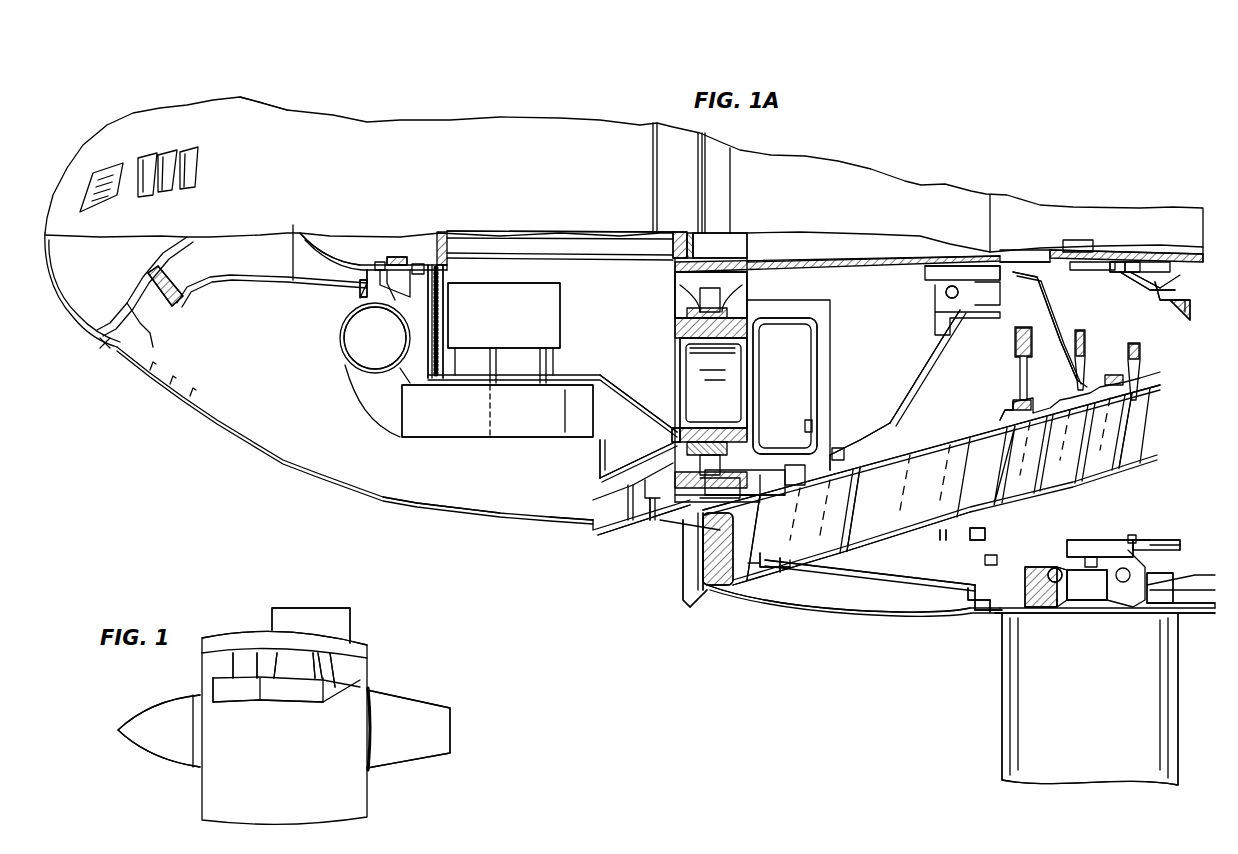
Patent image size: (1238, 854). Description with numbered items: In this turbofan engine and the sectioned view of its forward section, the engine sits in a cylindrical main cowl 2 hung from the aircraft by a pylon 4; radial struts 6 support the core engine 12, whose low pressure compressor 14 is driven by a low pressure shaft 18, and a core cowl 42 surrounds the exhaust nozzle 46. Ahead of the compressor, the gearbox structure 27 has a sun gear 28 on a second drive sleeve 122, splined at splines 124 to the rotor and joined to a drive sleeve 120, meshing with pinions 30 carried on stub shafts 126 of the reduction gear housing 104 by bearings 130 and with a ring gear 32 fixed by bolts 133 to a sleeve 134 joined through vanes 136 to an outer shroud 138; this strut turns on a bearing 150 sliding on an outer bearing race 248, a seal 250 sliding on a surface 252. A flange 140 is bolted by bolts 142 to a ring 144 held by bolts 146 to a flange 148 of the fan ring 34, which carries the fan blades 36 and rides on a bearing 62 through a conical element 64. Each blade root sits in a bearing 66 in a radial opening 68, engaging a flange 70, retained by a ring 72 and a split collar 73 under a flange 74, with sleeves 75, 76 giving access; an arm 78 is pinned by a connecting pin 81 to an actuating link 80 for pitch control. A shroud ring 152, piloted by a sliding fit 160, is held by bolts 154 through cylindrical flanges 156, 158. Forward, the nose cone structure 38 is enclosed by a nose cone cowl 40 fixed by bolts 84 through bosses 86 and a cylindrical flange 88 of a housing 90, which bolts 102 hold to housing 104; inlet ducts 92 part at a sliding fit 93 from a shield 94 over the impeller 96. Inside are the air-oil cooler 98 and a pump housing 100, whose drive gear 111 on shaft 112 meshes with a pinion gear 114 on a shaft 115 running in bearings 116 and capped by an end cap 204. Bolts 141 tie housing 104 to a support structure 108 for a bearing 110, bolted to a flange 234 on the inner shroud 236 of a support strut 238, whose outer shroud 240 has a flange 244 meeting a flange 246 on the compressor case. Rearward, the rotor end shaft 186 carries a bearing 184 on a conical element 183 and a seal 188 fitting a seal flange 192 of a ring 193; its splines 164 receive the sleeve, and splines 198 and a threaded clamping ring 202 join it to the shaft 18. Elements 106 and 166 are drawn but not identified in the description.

In FIG. 1, the main cowl 2 is at (250, 635).
In FIG. 1, the pylon 4 is at (315, 598).
In FIG. 1, the radial struts 6 is at (294, 665).
In FIG. 1A, the core engine 12 is at (693, 597).
In FIG. 1, the core engine 12 is at (208, 683).
In FIG. 1A, the low pressure compressor 14 is at (989, 423).
In FIG. 1A, the low pressure shaft 18 is at (1160, 252).
In FIG. 1A, the gearbox structure 27 is at (654, 307).
In FIG. 1A, the sun gear 28 is at (675, 266).
In FIG. 1A, the pinions 30 is at (675, 288).
In FIG. 1A, the ring gear 32 is at (705, 518).
In FIG. 1A, the fan ring 34 is at (1025, 580).
In FIG. 1A, the fan blades 36 is at (1090, 699).
In FIG. 1, the fan blades 36 is at (245, 665).
In FIG. 1A, the nose cone structure 38 is at (324, 133).
In FIG. 1, the nose cone structure 38 is at (157, 752).
In FIG. 1A, the nose cone cowl 40 is at (380, 505).
In FIG. 1, the core cowl 42 is at (343, 685).
In FIG. 1, the exhaust nozzle 46 is at (410, 700).
In FIG. 1A, the bearing 62 is at (1140, 540).
In FIG. 1A, the conical element 64 is at (1150, 540).
In FIG. 1A, the bearing 66 is at (1158, 560).
In FIG. 1A, the radial openings 68 is at (1052, 568).
In FIG. 1A, the flange 70 is at (1067, 560).
In FIG. 1A, the ring 72 is at (1087, 585).
In FIG. 1A, the split collar 73 is at (1058, 610).
In FIG. 1A, the flange 74 is at (1080, 608).
In FIG. 1A, the sleeve 75 is at (1042, 612).
In FIG. 1A, the sleeve 76 is at (1145, 612).
In FIG. 1A, the arm 78 is at (1107, 540).
In FIG. 1A, the actuating link 80 is at (1180, 530).
In FIG. 1A, the connecting pin 81 is at (1132, 535).
In FIG. 1A, the bolts 84 is at (595, 527).
In FIG. 1A, the bosses 86 is at (590, 520).
In FIG. 1A, the cylindrical flange 88 is at (590, 500).
In FIG. 1A, the housing 90 is at (622, 386).
In FIG. 1A, the inlet ducts 92 is at (105, 343).
In FIG. 1A, the sliding fit 93 is at (352, 300).
In FIG. 1A, the shield 94 is at (360, 310).
In FIG. 1A, the impeller 96 is at (370, 268).
In FIG. 1A, the air-oil cooler 98 is at (497, 411).
In FIG. 1A, the housing 100 is at (504, 315).
In FIG. 1A, the bolts 102 is at (672, 440).
In FIG. 1A, the reduction gear housing 104 is at (818, 330).
In FIG. 1A, the fastener 106 is at (670, 428).
In FIG. 1A, the support structure 108 is at (920, 364).
In FIG. 1A, the bearing 110 is at (946, 293).
In FIG. 1A, the drive gear 111 is at (428, 340).
In FIG. 1A, the shaft 112 is at (443, 320).
In FIG. 1A, the pinion gear 114 is at (447, 268).
In FIG. 1A, the shaft 115 is at (400, 257).
In FIG. 1A, the bearings 116 is at (380, 262).
In FIG. 1A, the drive sleeve 120 is at (593, 246).
In FIG. 1A, the second drive sleeve 122 is at (876, 260).
In FIG. 1A, the splines 124 is at (955, 266).
In FIG. 1A, the stub shafts 126 is at (362, 260).
In FIG. 1A, the bearing 130 is at (747, 285).
In FIG. 1A, the bolts 133 is at (665, 525).
In FIG. 1A, the sleeve 134 is at (682, 532).
In FIG. 1A, the vanes 136 is at (752, 548).
In FIG. 1A, the outer shroud 138 is at (850, 545).
In FIG. 1A, the flange 140 is at (790, 562).
In FIG. 1A, the bolts 141 is at (810, 422).
In FIG. 1A, the bolts 142 is at (790, 568).
In FIG. 1A, the ring 144 is at (868, 580).
In FIG. 1A, the bolts 146 is at (975, 585).
In FIG. 1A, the flange 148 is at (1003, 620).
In FIG. 1A, the bearing 150 is at (808, 473).
In FIG. 1A, the shroud ring 152 is at (808, 612).
In FIG. 1A, the bolts 154 is at (985, 615).
In FIG. 1A, the cylindrical flange 156 is at (968, 600).
In FIG. 1A, the cylindrical flange 158 is at (972, 614).
In FIG. 1A, the sliding fit 160 is at (755, 568).
In FIG. 1A, the splines 164 is at (1008, 268).
In FIG. 1A, the compressor casing 166 is at (1150, 478).
In FIG. 1A, the conical element 183 is at (1180, 300).
In FIG. 1A, the bearing 184 is at (1168, 285).
In FIG. 1A, the shaft 186 is at (1133, 262).
In FIG. 1A, the seal 188 is at (1130, 282).
In FIG. 1A, the cylindrical seal flange 192 is at (1130, 288).
In FIG. 1A, the ring 193 is at (1150, 302).
In FIG. 1A, the splines 198 is at (1112, 262).
In FIG. 1A, the threaded clamping ring 202 is at (1058, 260).
In FIG. 1A, the end cap 204 is at (293, 225).
In FIG. 1A, the flange 234 is at (890, 440).
In FIG. 1A, the inner shroud 236 is at (895, 462).
In FIG. 1A, the support strut 238 is at (968, 455).
In FIG. 1A, the outer shroud 240 is at (893, 525).
In FIG. 1A, the flange 244 is at (948, 537).
In FIG. 1A, the flange 246 is at (978, 540).
In FIG. 1A, the outer bearing race 248 is at (810, 493).
In FIG. 1A, the seal 250 is at (845, 455).
In FIG. 1A, the cooperating surface 252 is at (835, 498).